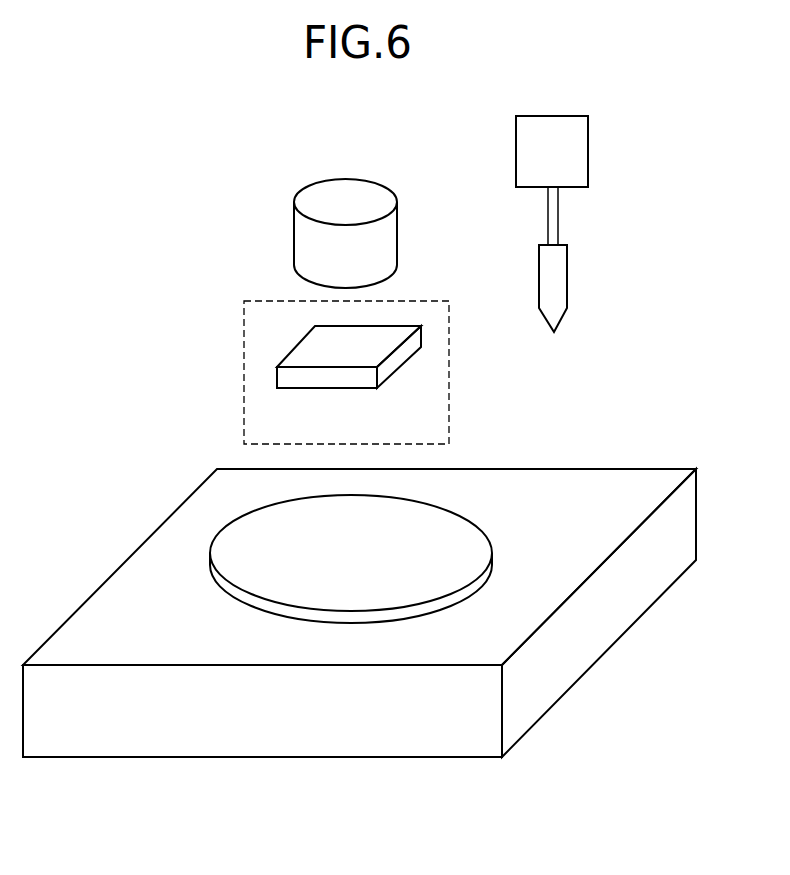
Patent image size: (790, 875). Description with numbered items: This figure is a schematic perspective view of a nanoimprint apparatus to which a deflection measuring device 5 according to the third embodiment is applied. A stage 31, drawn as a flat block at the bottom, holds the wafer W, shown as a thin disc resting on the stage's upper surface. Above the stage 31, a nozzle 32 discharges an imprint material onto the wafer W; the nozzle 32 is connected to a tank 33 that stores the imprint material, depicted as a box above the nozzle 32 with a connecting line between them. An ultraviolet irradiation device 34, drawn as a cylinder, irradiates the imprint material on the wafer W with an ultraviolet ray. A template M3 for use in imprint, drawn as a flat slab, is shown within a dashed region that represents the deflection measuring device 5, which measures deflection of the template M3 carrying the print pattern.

The ultraviolet irradiation device 34 is at (348, 178).
The tank 33 is at (588, 153).
The nozzle 32 is at (539, 262).
The deflection measuring device 5 is at (449, 381).
The template M3 is at (277, 373).
The stage 31 is at (605, 485).
The wafer W is at (210, 550).